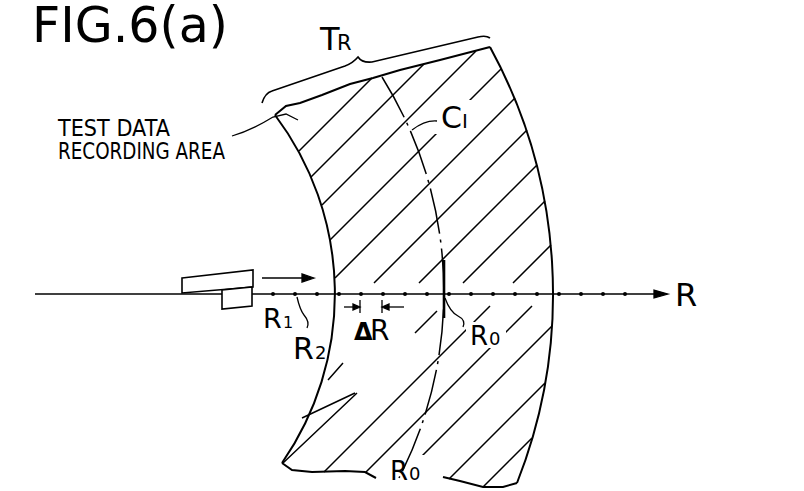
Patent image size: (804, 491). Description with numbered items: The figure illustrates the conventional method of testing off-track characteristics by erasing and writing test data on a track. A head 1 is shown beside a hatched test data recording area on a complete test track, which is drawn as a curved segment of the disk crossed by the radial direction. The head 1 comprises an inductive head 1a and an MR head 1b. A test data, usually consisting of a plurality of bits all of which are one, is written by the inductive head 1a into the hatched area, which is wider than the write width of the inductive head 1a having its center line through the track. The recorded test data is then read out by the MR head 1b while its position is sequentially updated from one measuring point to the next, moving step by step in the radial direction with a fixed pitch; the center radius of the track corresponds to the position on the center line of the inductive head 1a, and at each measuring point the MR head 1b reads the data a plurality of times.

The head 1 is at (175, 282).
The inductive head 1a is at (208, 280).
The MR head 1b is at (230, 305).